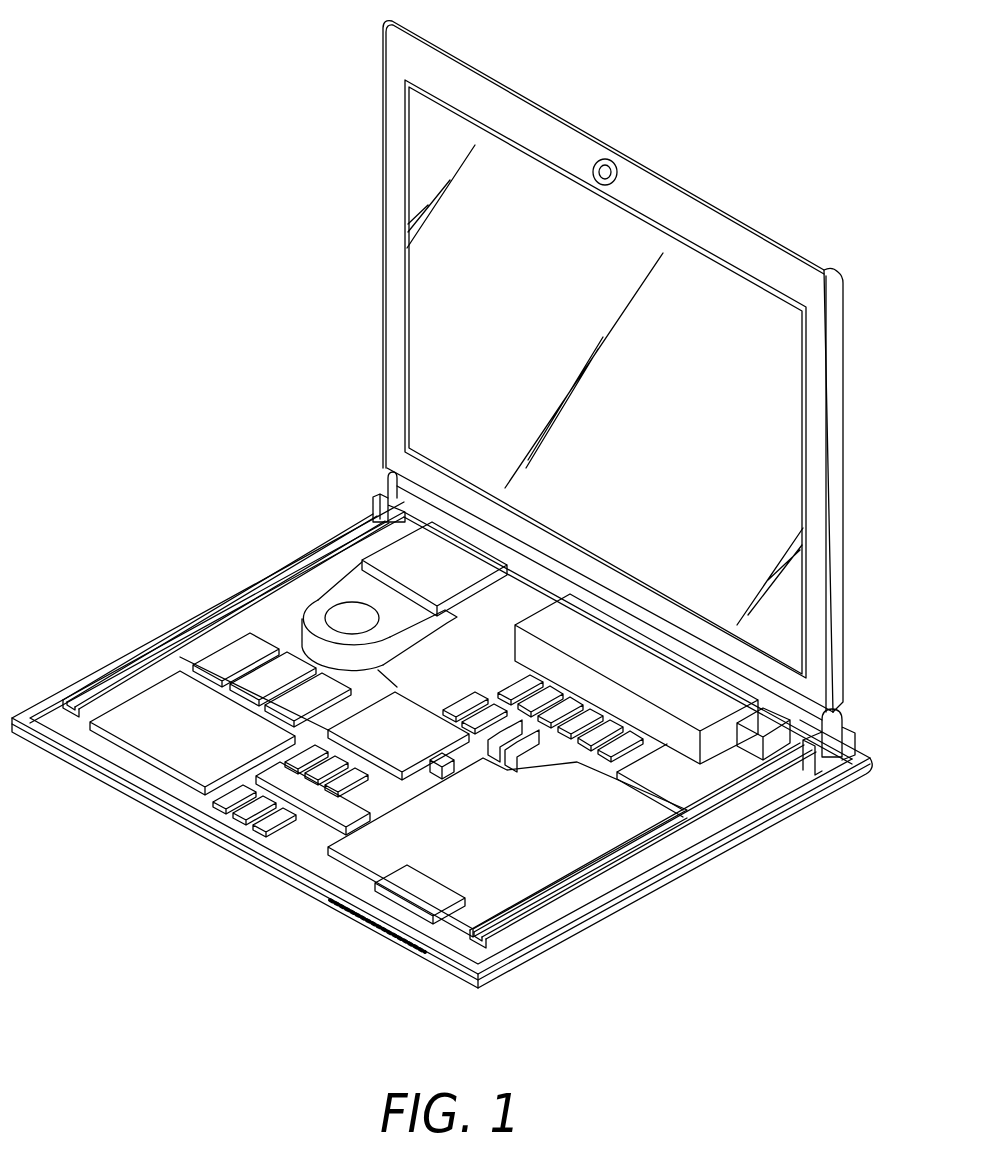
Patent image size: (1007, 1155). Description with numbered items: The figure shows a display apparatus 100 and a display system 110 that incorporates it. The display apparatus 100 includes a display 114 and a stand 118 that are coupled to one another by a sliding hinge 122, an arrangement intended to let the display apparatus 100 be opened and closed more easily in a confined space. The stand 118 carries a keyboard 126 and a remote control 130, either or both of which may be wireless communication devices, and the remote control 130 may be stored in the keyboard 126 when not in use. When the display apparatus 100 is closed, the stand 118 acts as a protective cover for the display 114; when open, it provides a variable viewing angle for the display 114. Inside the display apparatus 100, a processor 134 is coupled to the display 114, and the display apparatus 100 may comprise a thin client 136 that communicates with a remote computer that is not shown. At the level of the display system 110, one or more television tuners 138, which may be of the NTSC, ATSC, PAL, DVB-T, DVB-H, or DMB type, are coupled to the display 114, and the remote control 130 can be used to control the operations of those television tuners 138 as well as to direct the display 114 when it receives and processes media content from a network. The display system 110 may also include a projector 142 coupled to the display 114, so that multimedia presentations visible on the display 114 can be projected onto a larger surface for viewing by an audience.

The display apparatus 100 is at (168, 892).
The display system 110 is at (598, 55).
The display 114 is at (806, 506).
The stand 118 is at (675, 877).
The sliding hinge 122 is at (76, 692).
The keyboard 126 is at (98, 767).
The remote control 130 is at (378, 925).
The processor 134 is at (434, 743).
The thin client 136 is at (701, 786).
The television tuners 138 is at (676, 671).
The projector 142 is at (465, 571).